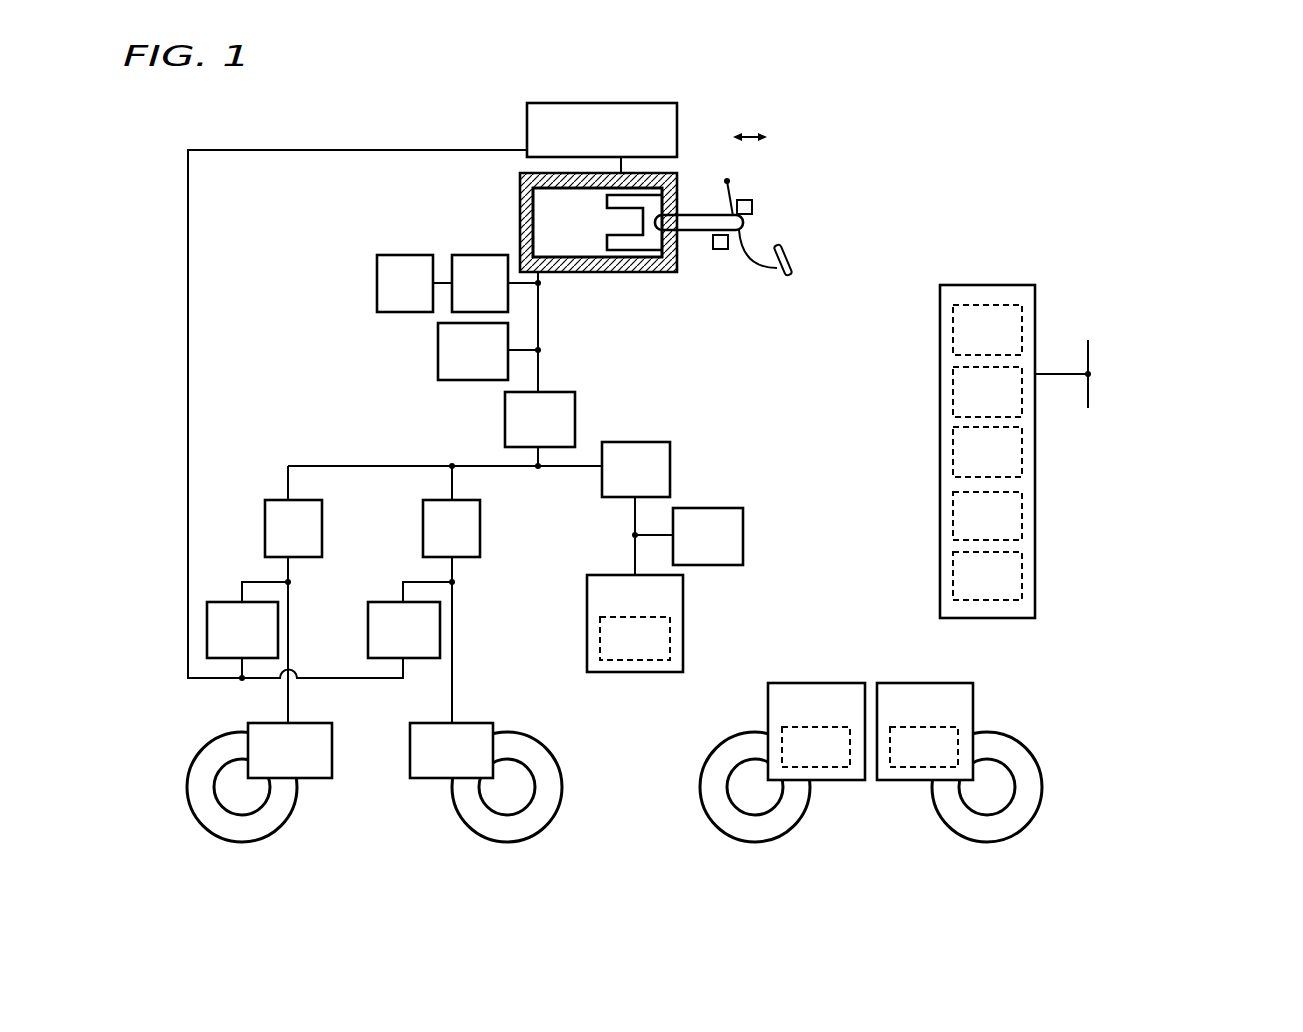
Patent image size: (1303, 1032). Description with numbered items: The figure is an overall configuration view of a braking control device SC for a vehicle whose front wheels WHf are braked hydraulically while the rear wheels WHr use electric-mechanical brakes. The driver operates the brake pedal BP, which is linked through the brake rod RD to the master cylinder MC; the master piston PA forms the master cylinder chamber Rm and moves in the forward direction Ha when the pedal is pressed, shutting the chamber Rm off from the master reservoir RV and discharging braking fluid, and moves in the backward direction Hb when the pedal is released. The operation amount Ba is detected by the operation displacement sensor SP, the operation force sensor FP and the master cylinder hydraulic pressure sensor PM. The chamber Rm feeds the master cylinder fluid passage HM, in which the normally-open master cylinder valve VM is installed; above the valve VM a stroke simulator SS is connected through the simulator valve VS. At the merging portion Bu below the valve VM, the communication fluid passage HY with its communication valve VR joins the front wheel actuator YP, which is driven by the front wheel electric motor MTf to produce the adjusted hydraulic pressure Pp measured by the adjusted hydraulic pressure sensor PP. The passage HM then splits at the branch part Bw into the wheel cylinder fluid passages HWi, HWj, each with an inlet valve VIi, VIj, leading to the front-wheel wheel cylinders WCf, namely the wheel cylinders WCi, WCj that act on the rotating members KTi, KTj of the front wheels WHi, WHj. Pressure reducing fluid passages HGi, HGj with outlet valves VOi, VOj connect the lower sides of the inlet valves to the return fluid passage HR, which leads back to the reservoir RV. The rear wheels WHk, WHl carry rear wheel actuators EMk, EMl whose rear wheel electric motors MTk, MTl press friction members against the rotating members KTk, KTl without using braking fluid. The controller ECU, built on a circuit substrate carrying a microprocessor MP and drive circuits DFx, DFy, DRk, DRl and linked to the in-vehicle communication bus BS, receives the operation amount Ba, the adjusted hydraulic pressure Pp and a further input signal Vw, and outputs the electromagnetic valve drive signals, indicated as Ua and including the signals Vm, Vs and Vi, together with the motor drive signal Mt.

The master reservoir RV is at (602, 138).
The master cylinder MC is at (521, 178).
The master cylinder chamber Rm is at (597, 222).
The master piston PA is at (645, 240).
The brake rod RD is at (692, 233).
The operation displacement sensor SP is at (762, 183).
The operation force sensor FP is at (720, 250).
The braking operation member BP is at (778, 227).
The forward direction Ha is at (729, 140).
The backward direction Hb is at (788, 140).
The return fluid passage HR is at (188, 258).
The stroke simulator SS is at (414, 283).
The simulator valve VS is at (495, 283).
The master cylinder hydraulic pressure sensor PM is at (488, 351).
The master cylinder fluid passage HM is at (540, 320).
The master cylinder valve VM is at (540, 419).
The braking control device SC is at (347, 406).
The branch part Bw is at (452, 464).
The merging portion Bu is at (538, 470).
The communication valve VR is at (636, 508).
The communication fluid passage HY is at (632, 532).
The adjusted hydraulic pressure sensor PP is at (708, 536).
The front wheel actuator YP is at (635, 623).
The front wheel electric motor MTf is at (635, 638).
The inlet valve VIj is at (293, 594).
The inlet valve VIi is at (451, 594).
The pressure reducing fluid passage HGj is at (250, 580).
The pressure reducing fluid passage HGi is at (408, 580).
The outlet valve VOj is at (242, 630).
The outlet valve VOi is at (404, 630).
The wheel cylinder fluid passage HWj is at (290, 600).
The wheel cylinder fluid passage HWi is at (453, 600).
The front wheel WHj is at (210, 741).
The wheel cylinder WCj is at (290, 750).
The rotating member KTj is at (213, 787).
The front wheel WHi is at (540, 741).
The wheel cylinder WCi is at (451, 750).
The rotating member KTi is at (523, 787).
The front-wheel wheel cylinder WCf is at (480, 793).
The front wheel WHf is at (553, 857).
The rear wheel WHl is at (722, 742).
The rear wheel WHk is at (1035, 724).
The rear wheel actuator EMl is at (816, 731).
The rear wheel actuator EMk is at (925, 731).
The rear wheel electric motor MTl is at (816, 747).
The rear wheel electric motor MTk is at (924, 747).
The rotating member KTl is at (727, 787).
The rotating member KTk is at (1012, 787).
The rear wheel WHr is at (1038, 858).
The controller ECU is at (983, 263).
The microprocessor MP is at (987, 330).
The drive circuit DFx is at (987, 392).
The drive circuit DFy is at (987, 452).
The drive circuit DRk is at (987, 516).
The drive circuit DRl is at (987, 576).
The in-vehicle communication bus BS is at (1072, 358).
The solenoid valve drive signal Ua is at (940, 347).
The motor drive signal Mt is at (940, 406).
The operation amount Ba is at (1037, 457).
The electromagnetic valve drive signal Vs is at (940, 515).
The electromagnetic valve drive signal Vm is at (940, 555).
The electromagnetic valve drive signal Vi is at (940, 595).
The adjusted hydraulic pressure Pp is at (1037, 555).
The wheel speed Vw is at (1037, 595).